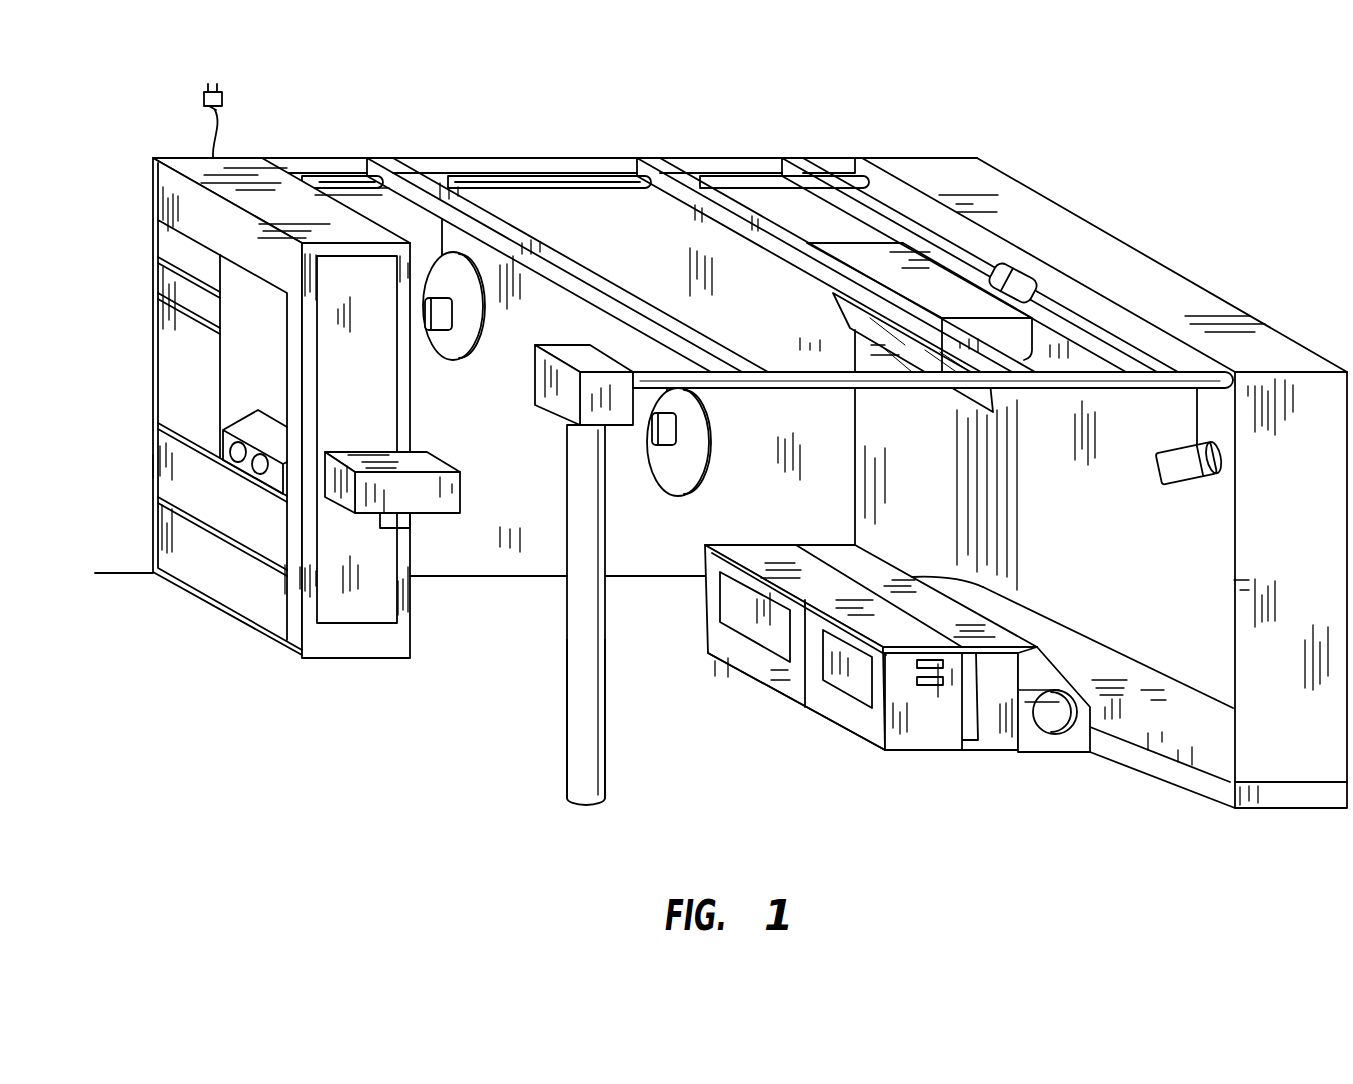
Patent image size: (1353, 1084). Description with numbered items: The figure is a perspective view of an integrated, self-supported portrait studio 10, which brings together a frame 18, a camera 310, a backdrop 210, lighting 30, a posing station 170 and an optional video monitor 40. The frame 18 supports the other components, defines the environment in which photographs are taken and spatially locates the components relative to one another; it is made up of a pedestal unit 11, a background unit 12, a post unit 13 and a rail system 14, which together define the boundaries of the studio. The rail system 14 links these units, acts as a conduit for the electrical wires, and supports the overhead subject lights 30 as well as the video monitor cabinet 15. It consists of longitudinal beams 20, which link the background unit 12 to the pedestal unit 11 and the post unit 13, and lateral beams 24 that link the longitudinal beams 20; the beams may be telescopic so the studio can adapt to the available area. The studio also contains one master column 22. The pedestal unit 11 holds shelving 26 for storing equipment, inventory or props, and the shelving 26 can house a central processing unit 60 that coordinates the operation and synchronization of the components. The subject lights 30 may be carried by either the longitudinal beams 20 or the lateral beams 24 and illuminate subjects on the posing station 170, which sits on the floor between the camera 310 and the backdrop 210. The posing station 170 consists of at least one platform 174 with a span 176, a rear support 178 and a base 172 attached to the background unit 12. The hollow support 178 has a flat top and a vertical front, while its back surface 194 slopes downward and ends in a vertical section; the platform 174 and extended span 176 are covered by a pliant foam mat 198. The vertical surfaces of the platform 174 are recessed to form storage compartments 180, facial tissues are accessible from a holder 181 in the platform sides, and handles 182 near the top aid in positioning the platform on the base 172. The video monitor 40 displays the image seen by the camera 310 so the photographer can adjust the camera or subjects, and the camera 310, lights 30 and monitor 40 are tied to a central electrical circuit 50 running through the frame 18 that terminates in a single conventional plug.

The portrait studio 10 is at (790, 157).
The pedestal unit 11 is at (158, 186).
The background unit 12 is at (1228, 316).
The post unit 13 is at (605, 778).
The rail system 14 is at (688, 202).
The video monitor cabinet 15 is at (1016, 343).
The frame 18 is at (622, 157).
The longitudinal beams 20 is at (495, 157).
The master column 22 is at (567, 623).
The lateral beams 24 is at (752, 215).
The shelving 26 is at (160, 430).
The subject lights 30 is at (481, 313).
The video monitor 40 is at (852, 318).
The central electrical circuit 50 is at (222, 97).
The central processing unit 60 is at (247, 425).
The posing station 170 is at (858, 559).
The base 172 is at (1010, 755).
The platform 174 is at (820, 710).
The span 176 is at (979, 742).
The support 178 is at (1050, 743).
The storage compartments 180 is at (730, 603).
The holder 181 is at (932, 689).
The handles 182 is at (915, 664).
The back surface 194 is at (1067, 679).
The foam mat 198 is at (987, 622).
The backdrop 210 is at (1115, 555).
The camera 310 is at (462, 482).